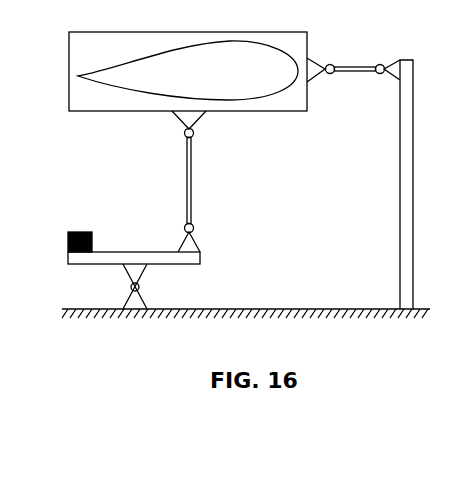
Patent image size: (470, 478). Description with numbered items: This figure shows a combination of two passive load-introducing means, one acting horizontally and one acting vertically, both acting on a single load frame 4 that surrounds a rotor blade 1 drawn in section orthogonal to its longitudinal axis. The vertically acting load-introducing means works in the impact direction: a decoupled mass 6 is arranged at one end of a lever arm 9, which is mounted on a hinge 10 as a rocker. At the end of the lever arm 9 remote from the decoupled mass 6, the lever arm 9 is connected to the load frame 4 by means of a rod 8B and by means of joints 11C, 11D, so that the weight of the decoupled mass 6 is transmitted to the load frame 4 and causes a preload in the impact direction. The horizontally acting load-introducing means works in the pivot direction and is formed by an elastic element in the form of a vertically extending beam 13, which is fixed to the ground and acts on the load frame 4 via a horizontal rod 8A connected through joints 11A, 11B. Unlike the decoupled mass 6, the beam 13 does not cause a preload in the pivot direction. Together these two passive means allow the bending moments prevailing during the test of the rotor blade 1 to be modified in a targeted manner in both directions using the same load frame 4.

The rotor blade 1 is at (258, 42).
The load frame 4 is at (69, 61).
The decoupled mass 6 is at (74, 232).
The horizontal rod 8A is at (355, 72).
The rod 8B is at (192, 153).
The lever arm 9 is at (202, 258).
The hinge 10 is at (140, 287).
The joint 11A is at (378, 64).
The joint 11B is at (330, 74).
The joint 11C is at (184, 133).
The joint 11D is at (186, 225).
The vertically extending beam 13 is at (413, 178).